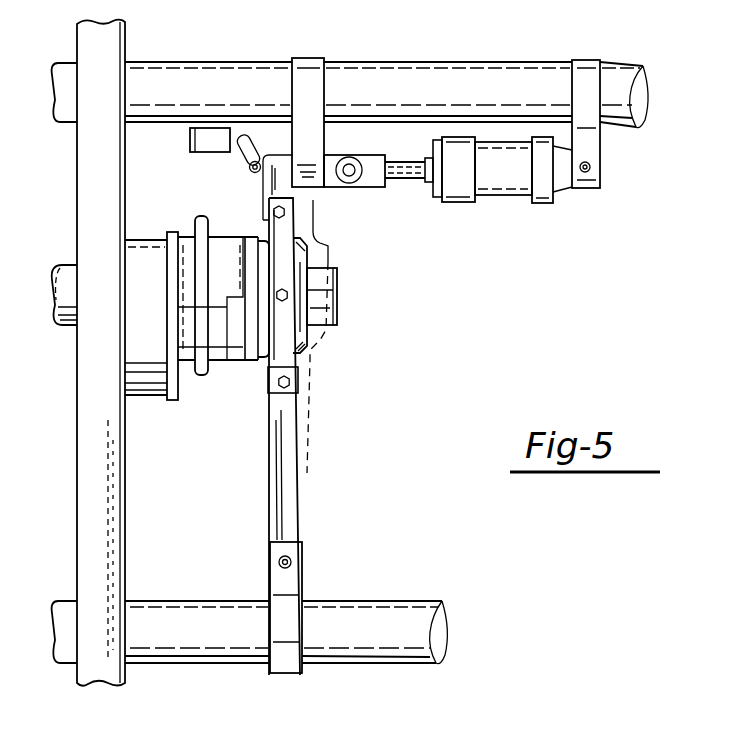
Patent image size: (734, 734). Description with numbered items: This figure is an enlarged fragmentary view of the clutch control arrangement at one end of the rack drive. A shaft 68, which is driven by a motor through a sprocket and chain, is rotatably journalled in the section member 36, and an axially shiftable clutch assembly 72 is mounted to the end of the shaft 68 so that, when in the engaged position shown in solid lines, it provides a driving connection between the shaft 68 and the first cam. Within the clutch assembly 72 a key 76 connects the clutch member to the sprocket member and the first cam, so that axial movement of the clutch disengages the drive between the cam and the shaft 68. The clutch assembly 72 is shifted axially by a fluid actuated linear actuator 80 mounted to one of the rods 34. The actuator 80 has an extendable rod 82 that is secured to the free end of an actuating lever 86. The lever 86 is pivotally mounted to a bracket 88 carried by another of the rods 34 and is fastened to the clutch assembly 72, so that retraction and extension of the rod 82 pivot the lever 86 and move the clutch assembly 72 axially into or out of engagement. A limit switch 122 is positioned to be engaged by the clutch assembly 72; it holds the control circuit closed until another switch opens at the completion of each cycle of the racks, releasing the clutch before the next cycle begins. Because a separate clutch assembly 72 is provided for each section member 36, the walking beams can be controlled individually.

The rod 34 is at (520, 80).
The section member 36 is at (90, 193).
The shaft 68 is at (63, 317).
The clutch assembly 72 is at (352, 300).
The key 76 is at (318, 294).
The fluid actuated linear actuator 80 is at (513, 183).
The extendable rod 82 is at (409, 180).
The actuating lever 86 is at (293, 489).
The bracket 88 is at (290, 585).
The limit switch 122 is at (190, 153).